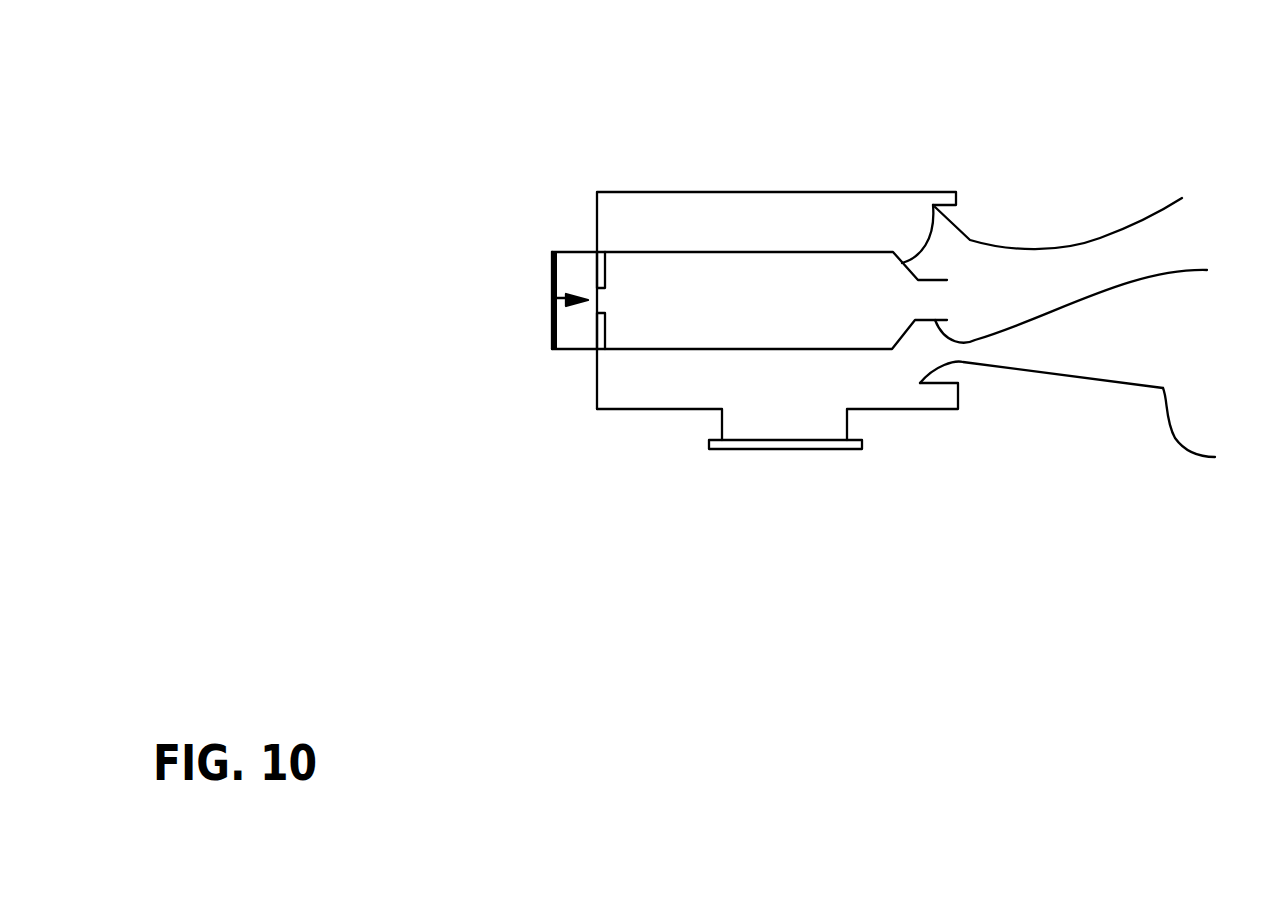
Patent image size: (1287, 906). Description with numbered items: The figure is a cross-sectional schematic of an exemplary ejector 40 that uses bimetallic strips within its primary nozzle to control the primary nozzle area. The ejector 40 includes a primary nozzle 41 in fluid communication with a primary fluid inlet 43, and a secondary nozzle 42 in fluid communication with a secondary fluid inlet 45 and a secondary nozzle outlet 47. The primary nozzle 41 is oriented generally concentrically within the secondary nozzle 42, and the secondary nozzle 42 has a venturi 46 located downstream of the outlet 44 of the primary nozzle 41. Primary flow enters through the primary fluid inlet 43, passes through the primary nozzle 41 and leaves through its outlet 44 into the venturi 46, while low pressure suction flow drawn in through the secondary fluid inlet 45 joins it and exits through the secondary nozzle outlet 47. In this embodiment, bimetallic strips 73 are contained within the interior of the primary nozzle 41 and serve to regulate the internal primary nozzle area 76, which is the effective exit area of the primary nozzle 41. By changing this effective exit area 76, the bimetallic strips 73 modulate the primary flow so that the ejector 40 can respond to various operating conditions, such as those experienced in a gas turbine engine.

The ejector 40 is at (977, 170).
The primary nozzle 41 is at (932, 203).
The secondary nozzle 42 is at (1003, 365).
The primary fluid inlet 43 is at (564, 349).
The outlet of the primary nozzle 44 is at (1086, 300).
The secondary fluid inlet 45 is at (848, 423).
The venturi 46 is at (1047, 247).
The secondary nozzle outlet 47 is at (1206, 428).
The bimetallic strips 73 is at (607, 270).
The internal primary nozzle area 76 is at (570, 298).